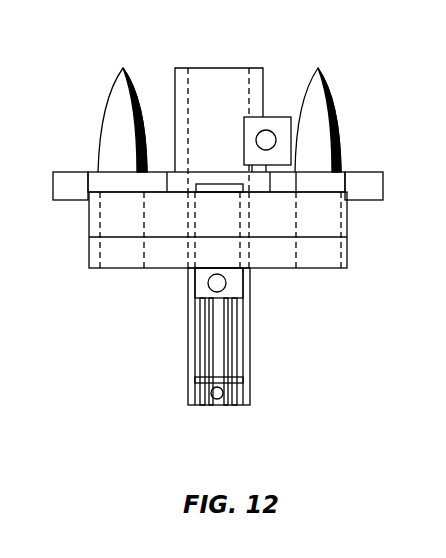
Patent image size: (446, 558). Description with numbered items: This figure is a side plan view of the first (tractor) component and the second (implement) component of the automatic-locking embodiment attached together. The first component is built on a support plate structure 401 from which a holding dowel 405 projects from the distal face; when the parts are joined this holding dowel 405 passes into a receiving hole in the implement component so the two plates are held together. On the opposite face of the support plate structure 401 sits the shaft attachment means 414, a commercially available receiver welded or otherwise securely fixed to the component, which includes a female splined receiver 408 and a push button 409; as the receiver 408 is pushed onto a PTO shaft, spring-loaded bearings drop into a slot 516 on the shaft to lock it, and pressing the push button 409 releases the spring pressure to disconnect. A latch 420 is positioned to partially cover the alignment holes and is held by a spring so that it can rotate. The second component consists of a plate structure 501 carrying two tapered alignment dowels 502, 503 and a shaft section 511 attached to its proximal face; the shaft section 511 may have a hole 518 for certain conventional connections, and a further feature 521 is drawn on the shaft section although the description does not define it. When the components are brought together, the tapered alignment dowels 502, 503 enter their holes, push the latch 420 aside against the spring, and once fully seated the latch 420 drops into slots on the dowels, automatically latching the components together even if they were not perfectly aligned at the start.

The support plate structure 401 is at (347, 215).
The holding dowel 405 is at (200, 285).
The female splined receiver 408 is at (271, 117).
The push button 409 is at (273, 133).
The shaft attachment means 414 is at (200, 67).
The latch 420 is at (122, 182).
The plate structure 501 is at (90, 253).
The tapered alignment dowel 502 is at (340, 140).
The tapered alignment dowel 503 is at (108, 110).
The shaft section 511 is at (250, 355).
The slot 516 is at (193, 382).
The hole 518 is at (228, 407).
The upper pin 521 is at (225, 287).